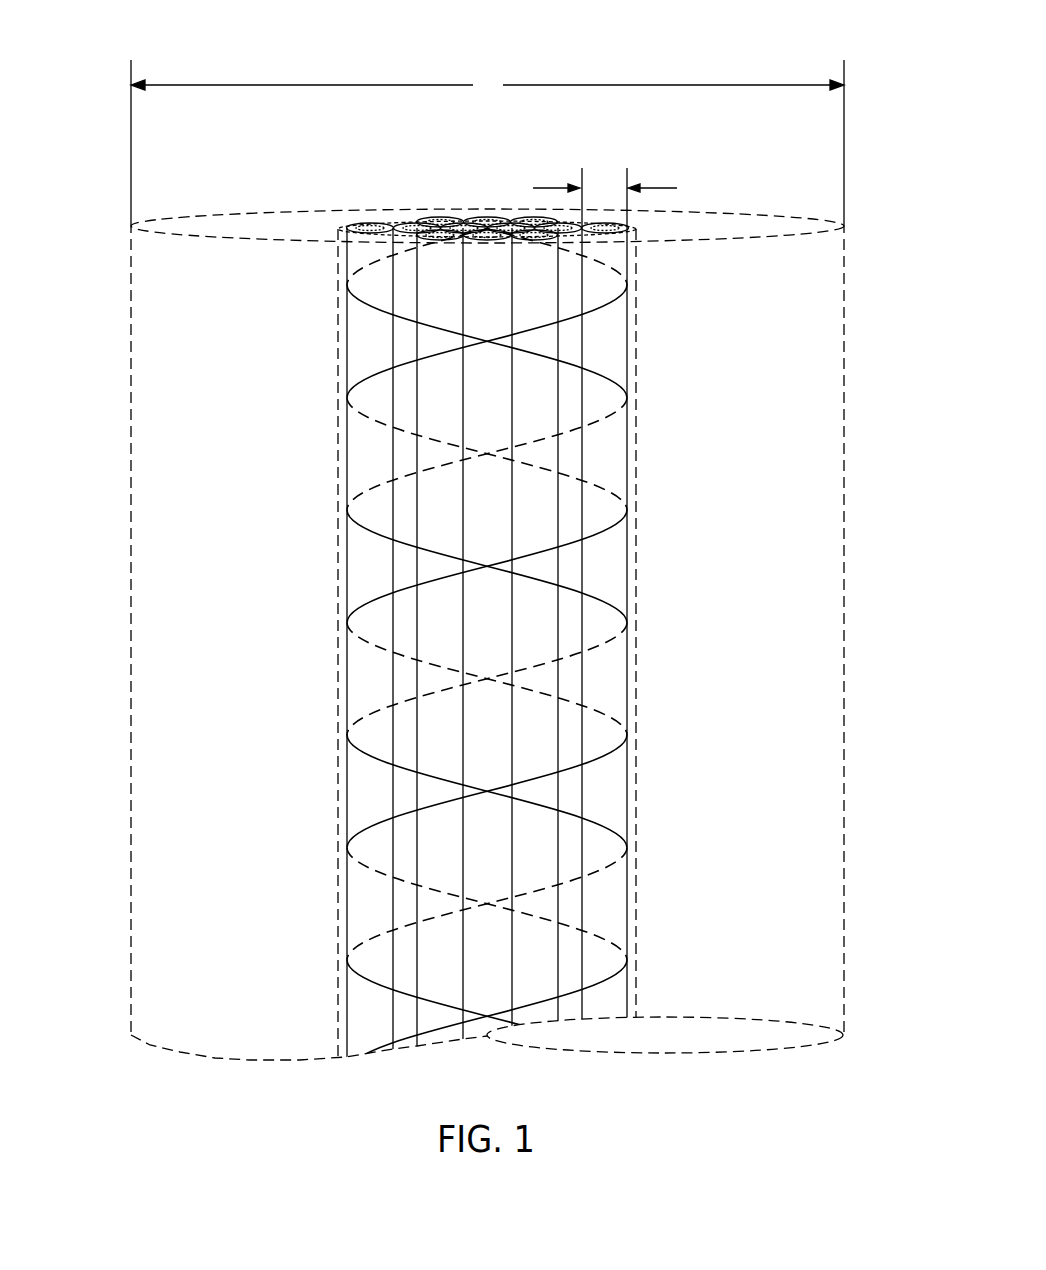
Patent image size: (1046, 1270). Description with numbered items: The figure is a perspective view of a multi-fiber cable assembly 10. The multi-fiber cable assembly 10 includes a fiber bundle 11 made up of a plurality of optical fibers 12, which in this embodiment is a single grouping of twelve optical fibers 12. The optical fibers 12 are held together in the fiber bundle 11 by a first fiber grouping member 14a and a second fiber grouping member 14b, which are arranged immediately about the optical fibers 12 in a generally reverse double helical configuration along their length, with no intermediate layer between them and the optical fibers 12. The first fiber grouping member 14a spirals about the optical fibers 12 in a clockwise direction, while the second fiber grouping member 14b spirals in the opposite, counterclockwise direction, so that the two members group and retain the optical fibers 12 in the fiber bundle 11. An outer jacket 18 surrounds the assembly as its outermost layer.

The multi-fiber cable assembly 10 is at (487, 536).
The fiber bundle 11 is at (470, 209).
The optical fibers 12 is at (393, 217).
The first fiber grouping member 14a is at (396, 372).
The second fiber grouping member 14b is at (592, 373).
The outer jacket 18 is at (223, 227).